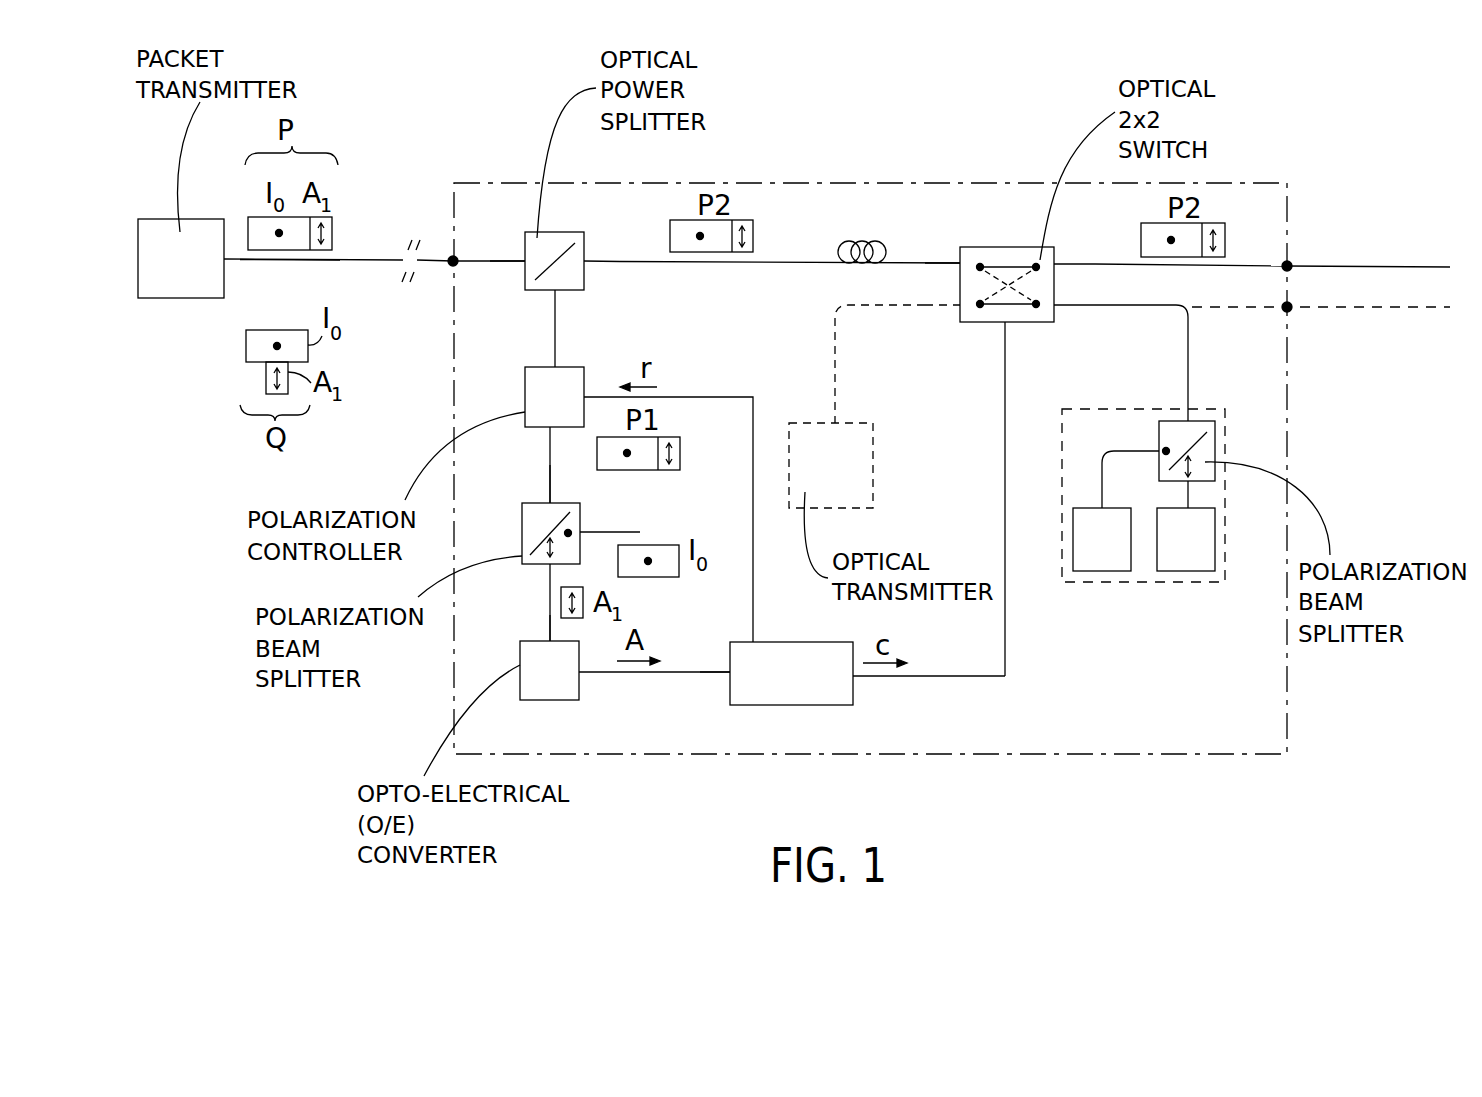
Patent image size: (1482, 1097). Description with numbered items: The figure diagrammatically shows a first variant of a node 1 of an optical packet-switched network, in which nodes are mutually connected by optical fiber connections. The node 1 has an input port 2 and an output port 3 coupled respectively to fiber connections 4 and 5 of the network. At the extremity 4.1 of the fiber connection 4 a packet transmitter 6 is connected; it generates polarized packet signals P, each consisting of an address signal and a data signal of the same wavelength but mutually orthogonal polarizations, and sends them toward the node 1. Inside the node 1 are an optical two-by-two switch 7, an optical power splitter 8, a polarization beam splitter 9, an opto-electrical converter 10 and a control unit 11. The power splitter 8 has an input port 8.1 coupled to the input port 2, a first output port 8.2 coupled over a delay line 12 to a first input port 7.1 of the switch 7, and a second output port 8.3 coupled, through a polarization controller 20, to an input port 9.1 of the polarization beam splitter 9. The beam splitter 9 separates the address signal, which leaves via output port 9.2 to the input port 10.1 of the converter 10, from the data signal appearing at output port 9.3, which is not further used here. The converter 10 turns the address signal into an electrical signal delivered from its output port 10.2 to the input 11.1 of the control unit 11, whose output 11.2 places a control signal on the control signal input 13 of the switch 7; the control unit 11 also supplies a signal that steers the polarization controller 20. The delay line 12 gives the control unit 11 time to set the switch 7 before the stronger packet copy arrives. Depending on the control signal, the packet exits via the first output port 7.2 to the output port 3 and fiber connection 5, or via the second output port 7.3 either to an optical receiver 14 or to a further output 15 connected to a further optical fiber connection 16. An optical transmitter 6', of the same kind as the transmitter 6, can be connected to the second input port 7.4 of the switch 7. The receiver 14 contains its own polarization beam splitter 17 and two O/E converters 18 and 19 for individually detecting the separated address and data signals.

The node 1 is at (830, 182).
The input port 2 is at (452, 263).
The output port 3 is at (1290, 263).
The fiber connection 4 is at (395, 258).
The extremity of the fiber connection 4.1 is at (320, 262).
The fiber connection 5 is at (1378, 265).
The packet transmitter 6 is at (181, 281).
The optical transmitter 6' is at (851, 465).
The optical 2×2 switch 7 is at (1030, 247).
The first input port 7.1 is at (960, 262).
The first output port 7.2 is at (1054, 262).
The second output port 7.3 is at (1056, 305).
The second input port 7.4 is at (957, 301).
The optical power splitter 8 is at (550, 232).
The input port 8.1 is at (523, 260).
The first output port 8.2 is at (584, 260).
The second output port 8.3 is at (555, 293).
The polarization beam splitter 9 is at (522, 553).
The input port 9.1 is at (551, 500).
The output port 9.2 is at (550, 570).
The output port 9.3 is at (587, 532).
The opto-electrical converter 10 is at (525, 700).
The input port 10.1 is at (550, 635).
The output port 10.2 is at (585, 675).
The control unit 11 is at (818, 642).
The input 11.1 is at (728, 672).
The output 11.2 is at (853, 676).
The delay line 12 is at (862, 240).
The control signal input 13 is at (1006, 330).
The optical receiver 14 is at (1144, 508).
The further output 15 is at (1290, 308).
The further optical fiber connection 16 is at (1378, 309).
The polarization beam splitter 17 is at (1215, 443).
The O/E converter 18 is at (1073, 553).
The O/E converter 19 is at (1178, 572).
The polarization controller 20 is at (525, 412).